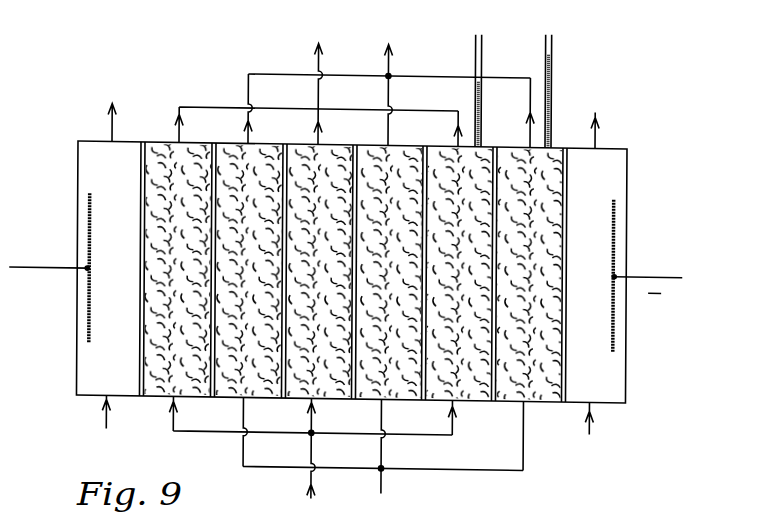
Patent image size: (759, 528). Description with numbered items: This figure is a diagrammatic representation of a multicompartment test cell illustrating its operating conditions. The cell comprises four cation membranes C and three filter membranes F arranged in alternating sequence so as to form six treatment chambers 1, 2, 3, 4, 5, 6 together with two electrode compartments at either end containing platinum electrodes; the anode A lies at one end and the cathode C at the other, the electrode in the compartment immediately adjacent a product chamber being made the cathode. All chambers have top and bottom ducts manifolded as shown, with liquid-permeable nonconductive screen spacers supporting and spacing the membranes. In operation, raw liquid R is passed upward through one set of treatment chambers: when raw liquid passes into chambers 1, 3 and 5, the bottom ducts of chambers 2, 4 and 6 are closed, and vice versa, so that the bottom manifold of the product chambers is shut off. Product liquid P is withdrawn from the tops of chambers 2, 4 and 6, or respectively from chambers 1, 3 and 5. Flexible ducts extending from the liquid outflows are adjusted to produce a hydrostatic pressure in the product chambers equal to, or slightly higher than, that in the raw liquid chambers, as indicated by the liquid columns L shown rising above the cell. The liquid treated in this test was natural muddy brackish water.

The treatment chamber 1 is at (177, 269).
The treatment chamber 2 is at (248, 270).
The treatment chamber 3 is at (319, 271).
The treatment chamber 4 is at (389, 272).
The treatment chamber 5 is at (459, 273).
The treatment chamber 6 is at (528, 274).
The anode A is at (49, 267).
The cation membrane C is at (351, 527).
The filter membrane F is at (353, 263).
The product outlet P is at (388, 82).
The liquid column L is at (545, 59).
The recycle inlet R is at (302, 448).